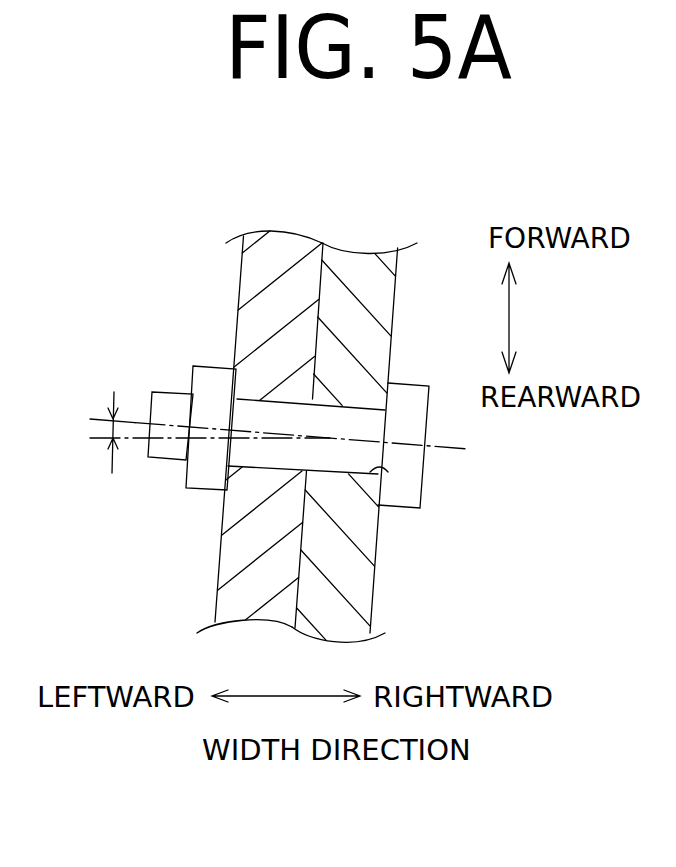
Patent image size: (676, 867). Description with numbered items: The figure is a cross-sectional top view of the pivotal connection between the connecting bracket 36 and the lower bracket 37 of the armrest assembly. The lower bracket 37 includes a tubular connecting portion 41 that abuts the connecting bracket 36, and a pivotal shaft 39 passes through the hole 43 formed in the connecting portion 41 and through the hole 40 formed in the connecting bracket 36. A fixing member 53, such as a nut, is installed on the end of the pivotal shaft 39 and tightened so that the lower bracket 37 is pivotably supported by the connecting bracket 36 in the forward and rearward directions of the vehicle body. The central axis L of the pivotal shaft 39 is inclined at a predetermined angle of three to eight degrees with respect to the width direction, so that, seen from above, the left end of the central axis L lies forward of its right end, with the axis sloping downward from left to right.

The connecting bracket 36 is at (255, 273).
The lower bracket 37 is at (405, 442).
The connecting portion 41 is at (355, 585).
The hole 40 is at (250, 401).
The pivotal shaft 39 is at (413, 403).
The fixing member 53 is at (203, 477).
The hole 43 is at (378, 473).
The central axis L is at (447, 448).